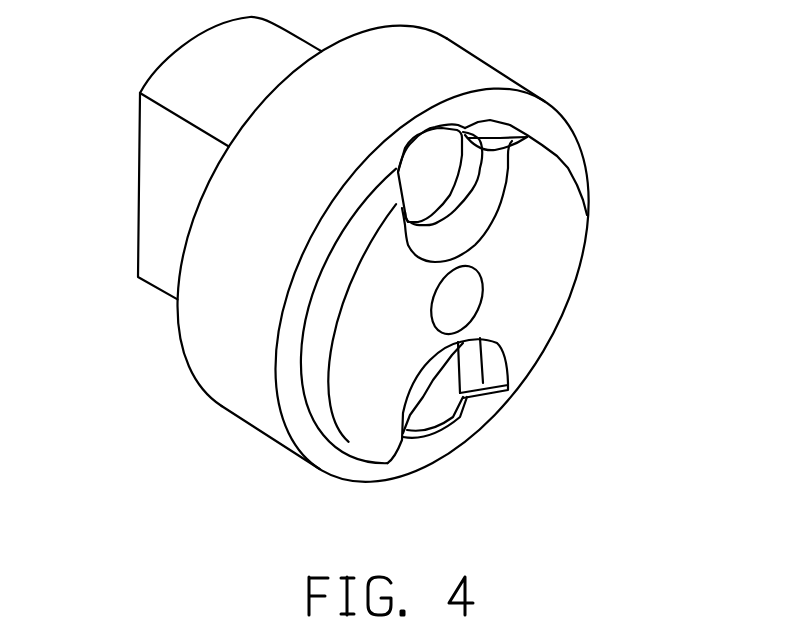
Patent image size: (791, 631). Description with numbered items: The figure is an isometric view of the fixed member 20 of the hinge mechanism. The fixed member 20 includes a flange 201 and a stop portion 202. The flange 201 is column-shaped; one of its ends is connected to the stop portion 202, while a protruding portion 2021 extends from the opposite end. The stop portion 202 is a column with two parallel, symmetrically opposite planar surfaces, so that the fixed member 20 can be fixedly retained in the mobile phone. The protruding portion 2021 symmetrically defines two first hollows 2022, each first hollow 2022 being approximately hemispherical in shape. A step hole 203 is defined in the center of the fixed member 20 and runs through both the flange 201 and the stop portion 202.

The fixed member 20 is at (381, 276).
The flange 201 is at (242, 372).
The stop portion 202 is at (163, 172).
The protruding portion 2021 is at (562, 228).
The first hollow 2022 is at (430, 395).
The step hole 203 is at (460, 295).